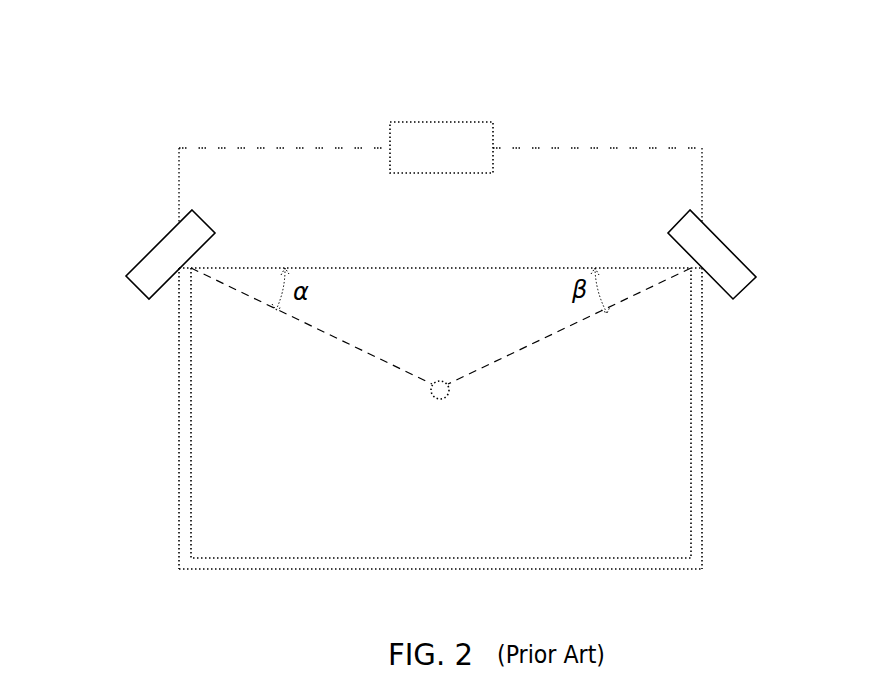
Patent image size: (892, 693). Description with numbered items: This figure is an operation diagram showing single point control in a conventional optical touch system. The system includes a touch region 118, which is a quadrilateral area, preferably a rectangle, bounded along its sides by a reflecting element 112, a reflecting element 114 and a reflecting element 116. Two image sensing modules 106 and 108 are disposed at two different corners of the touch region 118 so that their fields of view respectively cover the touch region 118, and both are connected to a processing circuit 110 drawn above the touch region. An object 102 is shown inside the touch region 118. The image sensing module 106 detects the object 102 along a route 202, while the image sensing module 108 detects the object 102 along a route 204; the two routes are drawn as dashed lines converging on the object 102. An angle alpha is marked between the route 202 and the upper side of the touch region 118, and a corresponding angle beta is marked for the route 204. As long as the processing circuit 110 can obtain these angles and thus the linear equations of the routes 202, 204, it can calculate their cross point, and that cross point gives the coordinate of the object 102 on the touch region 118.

The object 102 is at (440, 399).
The image sensing module 106 is at (137, 290).
The image sensing module 108 is at (745, 288).
The processing circuit 110 is at (440, 121).
The reflecting element 112 is at (179, 410).
The reflecting element 114 is at (425, 570).
The reflecting element 116 is at (697, 447).
The touch region 118 is at (202, 503).
The route 202 is at (303, 322).
The route 204 is at (570, 326).